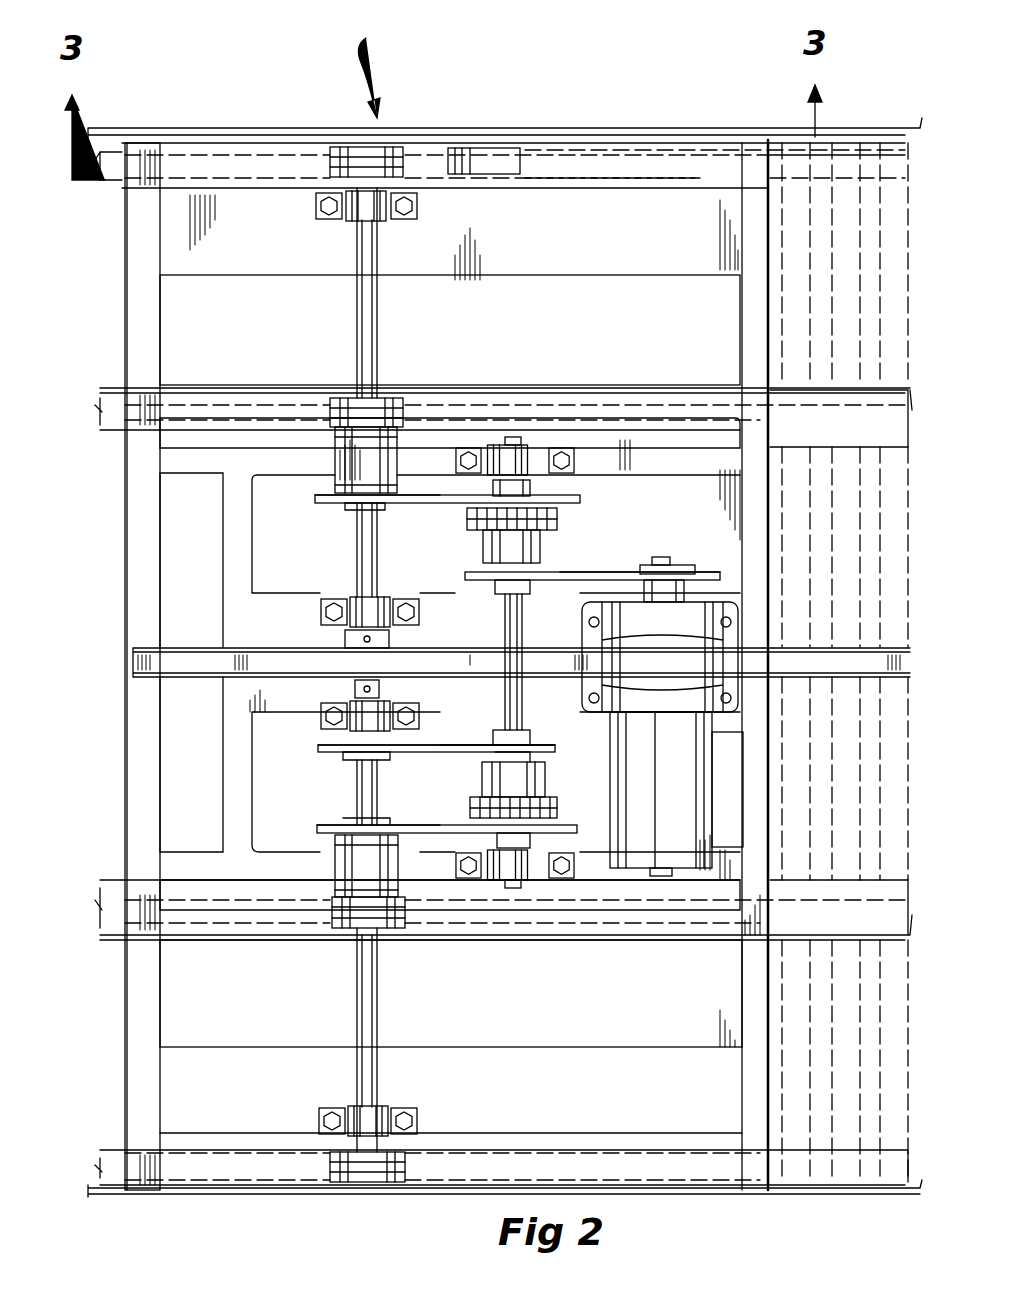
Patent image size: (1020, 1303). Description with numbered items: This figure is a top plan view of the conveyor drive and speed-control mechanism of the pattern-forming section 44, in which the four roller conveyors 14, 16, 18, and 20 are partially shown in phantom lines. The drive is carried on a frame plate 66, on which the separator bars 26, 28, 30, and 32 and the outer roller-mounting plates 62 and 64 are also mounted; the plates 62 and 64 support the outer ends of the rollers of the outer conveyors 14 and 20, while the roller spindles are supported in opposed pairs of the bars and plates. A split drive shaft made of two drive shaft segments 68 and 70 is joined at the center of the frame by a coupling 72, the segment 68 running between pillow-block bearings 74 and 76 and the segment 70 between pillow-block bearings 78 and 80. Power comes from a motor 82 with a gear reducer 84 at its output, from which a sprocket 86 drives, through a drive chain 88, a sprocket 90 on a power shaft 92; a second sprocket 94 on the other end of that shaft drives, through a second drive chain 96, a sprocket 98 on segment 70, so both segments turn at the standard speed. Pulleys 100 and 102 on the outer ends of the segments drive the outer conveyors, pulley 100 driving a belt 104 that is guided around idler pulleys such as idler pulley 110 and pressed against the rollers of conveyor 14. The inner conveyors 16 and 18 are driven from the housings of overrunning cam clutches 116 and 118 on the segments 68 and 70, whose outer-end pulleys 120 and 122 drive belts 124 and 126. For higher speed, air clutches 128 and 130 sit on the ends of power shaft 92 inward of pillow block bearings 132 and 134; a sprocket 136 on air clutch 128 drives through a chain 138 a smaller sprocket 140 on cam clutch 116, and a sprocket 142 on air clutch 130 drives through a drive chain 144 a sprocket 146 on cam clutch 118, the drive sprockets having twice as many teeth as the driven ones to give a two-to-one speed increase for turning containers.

The outer roller conveyor 14 is at (860, 298).
The inner roller conveyor 16 is at (860, 492).
The inner roller conveyor 18 is at (812, 822).
The outer roller conveyor 20 is at (880, 1020).
The separator bar 26 is at (222, 390).
The separator bar 28 is at (188, 647).
The separator bar 30 is at (205, 680).
The separator bar 32 is at (217, 938).
The pattern-forming section 44 is at (361, 62).
The outer roller-mounting plate 62 is at (178, 130).
The outer roller-mounting plate 64 is at (186, 1195).
The frame plate 66 is at (126, 585).
The drive shaft segment 68 is at (357, 322).
The drive shaft segment 70 is at (357, 776).
The coupling 72 is at (345, 640).
The pillow-block bearing 74 is at (346, 216).
The pillow-block bearing 76 is at (343, 600).
The pillow-block bearing 78 is at (333, 705).
The pillow-block bearing 80 is at (385, 1110).
The motor 82 is at (716, 793).
The gear reducer 84 is at (700, 612).
The sprocket 86 is at (692, 572).
The drive chain 88 is at (585, 572).
The sprocket 90 is at (465, 576).
The power shaft 92 is at (522, 622).
The sprocket 94 is at (555, 750).
The drive chain 96 is at (425, 755).
The sprocket 98 is at (318, 748).
The pulley 100 is at (345, 155).
The pulley 102 is at (388, 1182).
The belt 104 is at (572, 140).
The idler pulley 110 is at (525, 150).
The cam clutch 116 is at (335, 478).
The cam clutch 118 is at (338, 855).
The pulley 120 is at (382, 405).
The pulley 122 is at (345, 925).
The belt 124 is at (662, 395).
The belt 126 is at (585, 918).
The air clutch 128 is at (483, 550).
The air clutch 130 is at (482, 778).
The pillow block bearing 132 is at (560, 468).
The pillow block bearing 134 is at (545, 862).
The sprocket 136 is at (557, 520).
The chain 138 is at (427, 503).
The sprocket 140 is at (305, 503).
The sprocket 142 is at (588, 808).
The drive chain 144 is at (428, 800).
The sprocket 146 is at (320, 828).